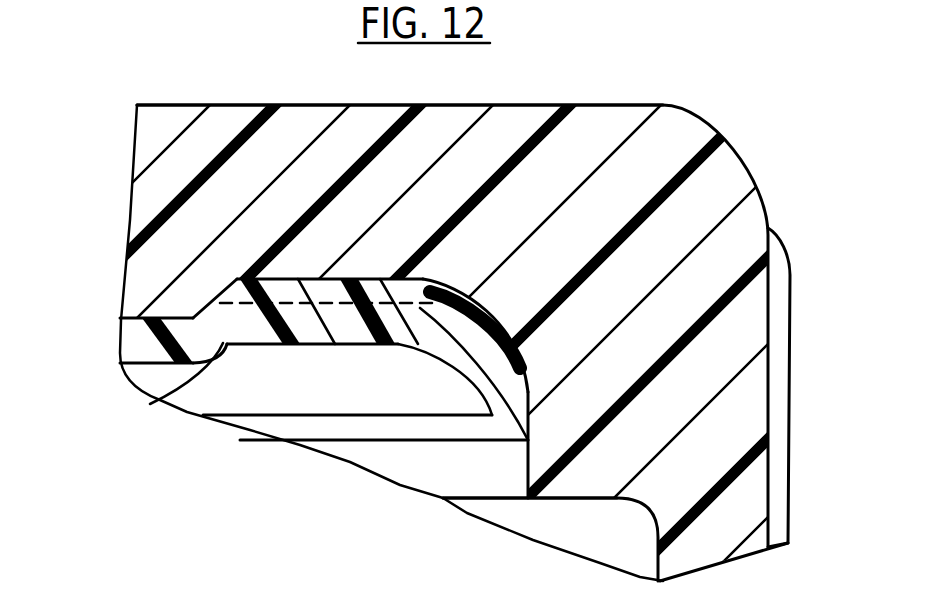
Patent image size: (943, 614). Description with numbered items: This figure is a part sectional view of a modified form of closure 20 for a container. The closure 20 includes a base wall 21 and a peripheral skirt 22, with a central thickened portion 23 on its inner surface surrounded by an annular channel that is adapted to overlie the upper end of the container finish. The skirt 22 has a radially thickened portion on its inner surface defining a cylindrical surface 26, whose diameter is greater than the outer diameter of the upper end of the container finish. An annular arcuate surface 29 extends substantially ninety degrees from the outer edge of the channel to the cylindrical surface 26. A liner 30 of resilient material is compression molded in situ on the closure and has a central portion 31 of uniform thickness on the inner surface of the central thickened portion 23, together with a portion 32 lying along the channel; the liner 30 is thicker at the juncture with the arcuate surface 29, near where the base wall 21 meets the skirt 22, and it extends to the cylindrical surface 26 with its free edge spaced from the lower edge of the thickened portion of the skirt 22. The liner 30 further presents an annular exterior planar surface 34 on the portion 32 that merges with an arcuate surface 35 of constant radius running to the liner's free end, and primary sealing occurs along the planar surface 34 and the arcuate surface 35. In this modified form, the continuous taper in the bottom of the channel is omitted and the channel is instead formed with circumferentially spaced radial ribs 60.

The closure 20 is at (638, 87).
The base wall 21 is at (386, 103).
The peripheral skirt 22 is at (752, 502).
The central thickened portion 23 is at (160, 252).
The cylindrical surface 26 is at (526, 484).
The annular arcuate surface 29 is at (490, 312).
The liner 30 is at (258, 345).
The central portion of liner 31 is at (137, 343).
The channel portion of liner 32 is at (336, 310).
The annular exterior planar surface 34 is at (160, 390).
The arcuate surface of liner 35 is at (425, 352).
The circumferentially spaced radial ribs 60 is at (277, 300).